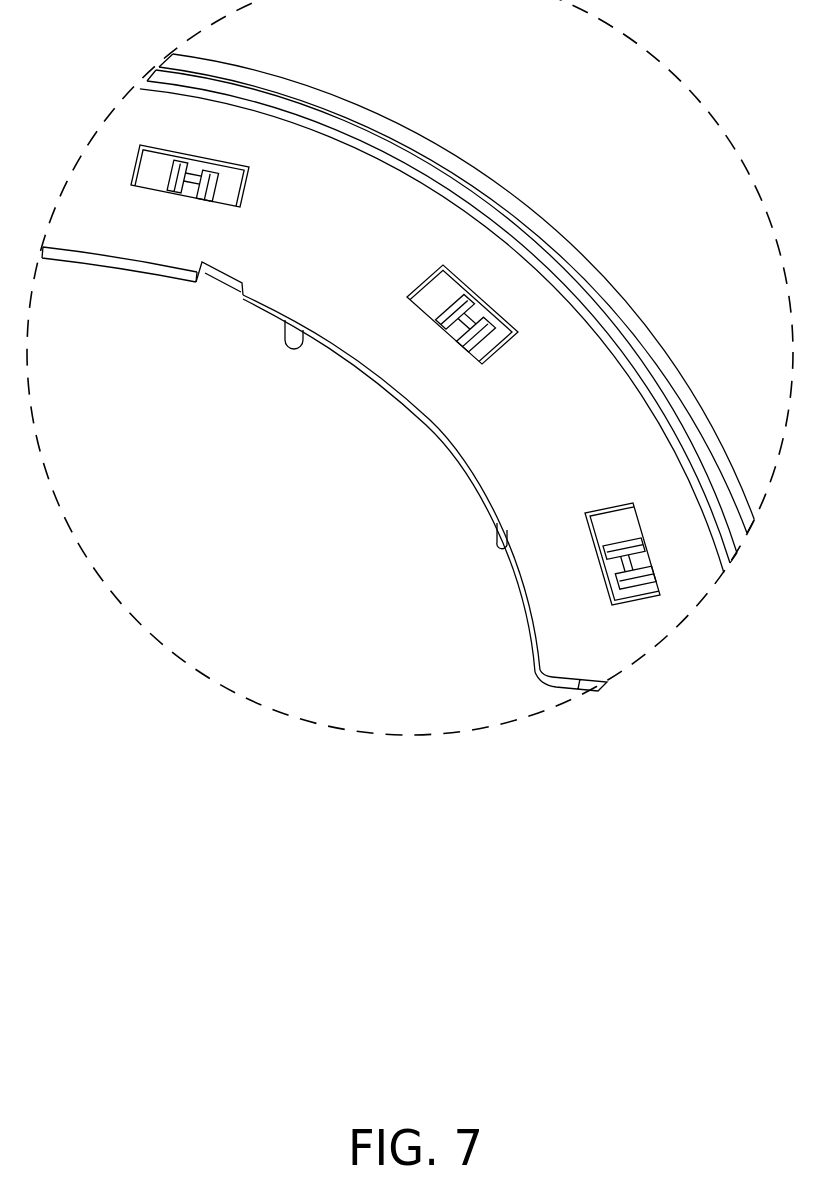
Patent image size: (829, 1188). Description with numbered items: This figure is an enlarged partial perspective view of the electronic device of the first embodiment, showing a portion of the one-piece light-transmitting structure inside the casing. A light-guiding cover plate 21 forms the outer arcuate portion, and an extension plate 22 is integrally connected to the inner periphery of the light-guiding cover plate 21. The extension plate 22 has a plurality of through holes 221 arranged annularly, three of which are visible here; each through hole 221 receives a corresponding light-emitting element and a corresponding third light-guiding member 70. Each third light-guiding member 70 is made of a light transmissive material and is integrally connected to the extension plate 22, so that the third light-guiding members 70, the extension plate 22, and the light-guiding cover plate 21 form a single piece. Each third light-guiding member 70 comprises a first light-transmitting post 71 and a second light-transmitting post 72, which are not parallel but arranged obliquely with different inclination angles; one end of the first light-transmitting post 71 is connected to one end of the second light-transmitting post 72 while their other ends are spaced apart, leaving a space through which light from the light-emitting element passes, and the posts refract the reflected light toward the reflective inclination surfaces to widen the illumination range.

The light-guiding cover plate 21 is at (470, 163).
The extension plate 22 is at (500, 448).
The through hole 221 is at (148, 177).
The third light-guiding member 70 is at (389, 16).
The first light-transmitting post 71 is at (180, 160).
The second light-transmitting post 72 is at (213, 167).